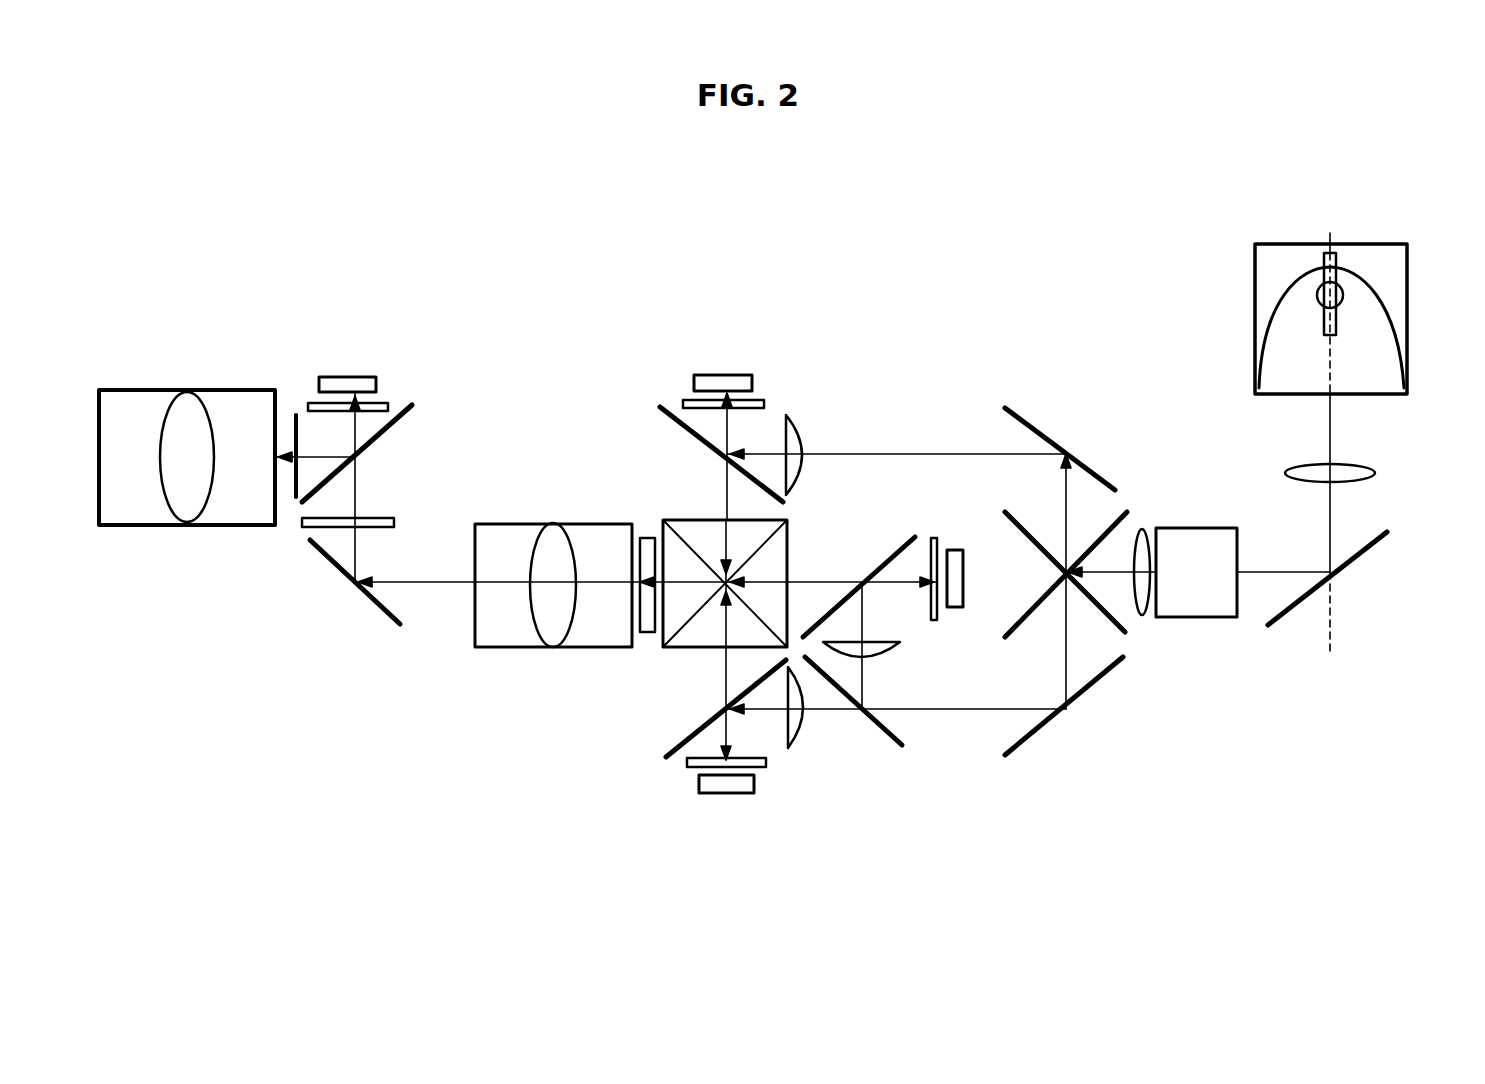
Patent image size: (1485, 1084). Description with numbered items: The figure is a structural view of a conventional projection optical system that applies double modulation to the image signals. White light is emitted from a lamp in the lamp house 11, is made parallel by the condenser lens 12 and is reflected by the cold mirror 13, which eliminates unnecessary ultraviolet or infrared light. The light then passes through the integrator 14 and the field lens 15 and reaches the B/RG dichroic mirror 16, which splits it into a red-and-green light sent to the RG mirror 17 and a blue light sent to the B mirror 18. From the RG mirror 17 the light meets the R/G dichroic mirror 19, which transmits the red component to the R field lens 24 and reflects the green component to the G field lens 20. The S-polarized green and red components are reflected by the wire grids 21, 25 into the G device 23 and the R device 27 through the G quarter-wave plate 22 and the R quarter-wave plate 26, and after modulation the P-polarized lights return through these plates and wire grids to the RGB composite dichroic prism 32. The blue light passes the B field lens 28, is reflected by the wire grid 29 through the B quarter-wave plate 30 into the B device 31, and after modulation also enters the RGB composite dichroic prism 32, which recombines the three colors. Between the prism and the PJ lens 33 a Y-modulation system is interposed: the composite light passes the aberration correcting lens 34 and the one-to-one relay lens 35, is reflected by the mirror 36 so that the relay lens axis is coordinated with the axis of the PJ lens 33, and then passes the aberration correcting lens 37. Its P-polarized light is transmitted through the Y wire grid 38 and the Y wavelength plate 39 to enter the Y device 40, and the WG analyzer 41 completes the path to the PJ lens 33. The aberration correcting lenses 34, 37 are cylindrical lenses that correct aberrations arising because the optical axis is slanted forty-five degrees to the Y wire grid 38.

The lamp house 11 is at (1407, 290).
The condenser lens 12 is at (1360, 465).
The cold mirror 13 is at (1355, 560).
The integrator 14 is at (1210, 528).
The field lens 15 is at (1140, 528).
The B/RG dichroic mirror 16 is at (1128, 633).
The RG mirror 17 is at (1082, 698).
The B mirror 18 is at (1068, 456).
The R/G dichroic mirror 19 is at (885, 735).
The G field lens 20 is at (878, 650).
The wire grid 21 is at (888, 556).
The G quarter-wave plate 22 is at (935, 538).
The G device 23 is at (957, 607).
The R field lens 24 is at (804, 735).
The wire grid 25 is at (664, 760).
The R quarter-wave plate 26 is at (766, 767).
The R device 27 is at (722, 793).
The B field lens 28 is at (800, 432).
The wire grid 29 is at (660, 407).
The B quarter-wave plate 30 is at (764, 404).
The B device 31 is at (728, 375).
The RGB composite dichroic prism 32 is at (662, 646).
The PJ lens 33 is at (158, 390).
The aberration correcting lens 34 is at (648, 538).
The 1:1 relay lens 35 is at (508, 626).
The mirror 36 is at (390, 628).
The aberration correcting lens 37 is at (378, 518).
The Y wire grid 38 is at (412, 405).
The Y wavelength plate 39 is at (388, 404).
The Y device 40 is at (357, 377).
The WG analyzer 41 is at (296, 415).